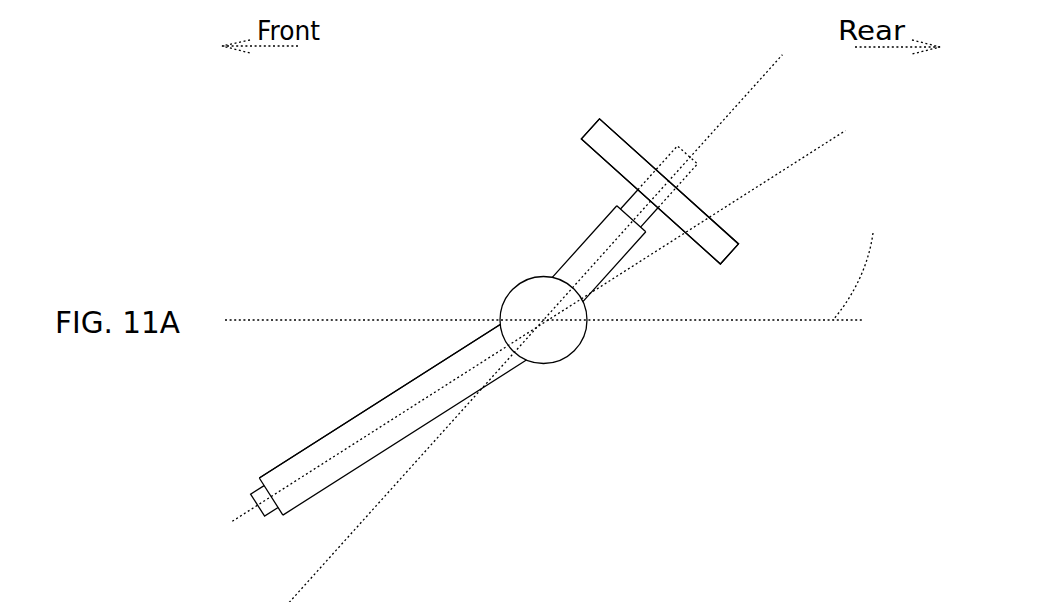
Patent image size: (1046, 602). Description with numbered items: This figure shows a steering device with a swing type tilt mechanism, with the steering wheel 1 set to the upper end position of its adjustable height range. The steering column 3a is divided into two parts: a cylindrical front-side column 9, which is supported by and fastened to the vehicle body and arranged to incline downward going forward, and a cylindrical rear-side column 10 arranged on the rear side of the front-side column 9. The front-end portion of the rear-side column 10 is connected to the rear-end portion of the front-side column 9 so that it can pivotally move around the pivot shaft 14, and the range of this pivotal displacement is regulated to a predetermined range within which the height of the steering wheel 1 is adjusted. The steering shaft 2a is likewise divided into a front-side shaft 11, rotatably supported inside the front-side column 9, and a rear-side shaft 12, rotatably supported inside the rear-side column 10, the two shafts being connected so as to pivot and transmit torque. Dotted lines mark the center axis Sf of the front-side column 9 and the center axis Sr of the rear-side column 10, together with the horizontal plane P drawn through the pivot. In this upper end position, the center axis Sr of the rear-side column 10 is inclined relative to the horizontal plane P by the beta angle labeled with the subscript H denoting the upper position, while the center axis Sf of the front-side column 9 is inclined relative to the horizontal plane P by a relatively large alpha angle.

The steering wheel 1 is at (618, 133).
The rear-side shaft 12 is at (647, 158).
The steering shaft 2a is at (683, 205).
The rear-side column 10 is at (564, 260).
The pivot shaft 14 is at (528, 305).
The front-side column 9 is at (318, 457).
The steering column 3a is at (388, 401).
The front-side shaft 11 is at (275, 517).
The center axis of the front-side column Sf is at (357, 442).
The center axis of the rear-side column Sr is at (590, 250).
The horizontal plane P is at (856, 266).
The upper end position subscript of inclination angle β H is at (543, 345).